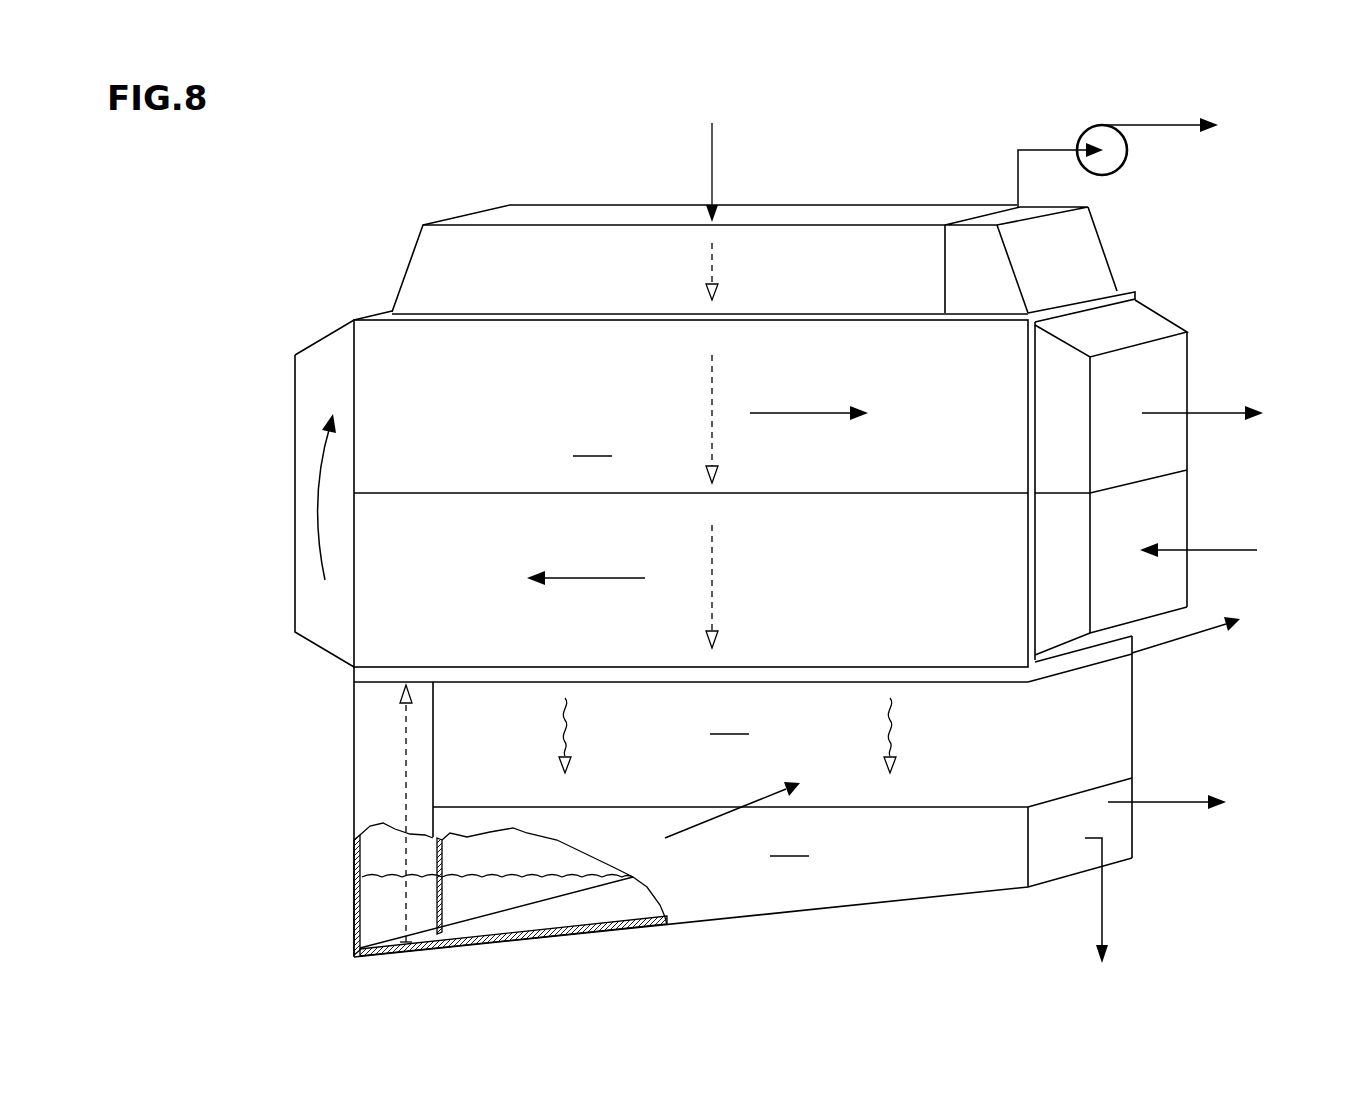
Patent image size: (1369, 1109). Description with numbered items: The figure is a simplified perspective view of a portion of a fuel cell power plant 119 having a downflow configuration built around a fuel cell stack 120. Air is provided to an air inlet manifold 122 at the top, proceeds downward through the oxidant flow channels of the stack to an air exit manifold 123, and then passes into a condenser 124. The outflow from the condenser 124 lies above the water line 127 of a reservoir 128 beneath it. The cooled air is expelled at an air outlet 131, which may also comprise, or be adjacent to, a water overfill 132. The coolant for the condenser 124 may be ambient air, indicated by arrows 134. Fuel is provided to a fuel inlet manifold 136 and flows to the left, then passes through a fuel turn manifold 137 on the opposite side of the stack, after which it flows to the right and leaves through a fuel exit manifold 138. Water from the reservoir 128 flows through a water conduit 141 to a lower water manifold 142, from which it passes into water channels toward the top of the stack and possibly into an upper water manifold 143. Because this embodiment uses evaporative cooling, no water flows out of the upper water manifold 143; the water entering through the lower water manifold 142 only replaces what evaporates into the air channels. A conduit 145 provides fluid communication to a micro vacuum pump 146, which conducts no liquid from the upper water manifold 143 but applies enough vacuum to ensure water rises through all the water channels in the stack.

The fuel cell power plant 119 is at (444, 171).
The fuel cell stack 120 is at (661, 489).
The air inlet manifold 122 is at (800, 213).
The air exit manifold 123 is at (806, 678).
The condenser 124 is at (782, 747).
The water line 127 is at (553, 874).
The reservoir 128 is at (743, 882).
The air outlet 131 is at (1158, 803).
The water overfill 132 is at (1105, 925).
The arrows 134 is at (1188, 640).
The fuel inlet manifold 136 is at (1177, 528).
The fuel turn manifold 137 is at (310, 430).
The fuel exit manifold 138 is at (1170, 387).
The water conduit 141 is at (404, 917).
The lower water manifold 142 is at (370, 674).
The upper water manifold 143 is at (1073, 240).
The conduit 145 is at (1017, 185).
The micro vacuum pump 146 is at (1120, 153).